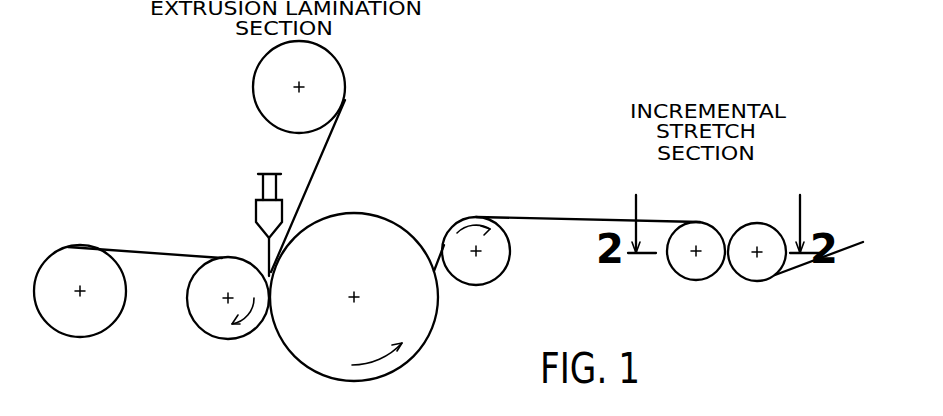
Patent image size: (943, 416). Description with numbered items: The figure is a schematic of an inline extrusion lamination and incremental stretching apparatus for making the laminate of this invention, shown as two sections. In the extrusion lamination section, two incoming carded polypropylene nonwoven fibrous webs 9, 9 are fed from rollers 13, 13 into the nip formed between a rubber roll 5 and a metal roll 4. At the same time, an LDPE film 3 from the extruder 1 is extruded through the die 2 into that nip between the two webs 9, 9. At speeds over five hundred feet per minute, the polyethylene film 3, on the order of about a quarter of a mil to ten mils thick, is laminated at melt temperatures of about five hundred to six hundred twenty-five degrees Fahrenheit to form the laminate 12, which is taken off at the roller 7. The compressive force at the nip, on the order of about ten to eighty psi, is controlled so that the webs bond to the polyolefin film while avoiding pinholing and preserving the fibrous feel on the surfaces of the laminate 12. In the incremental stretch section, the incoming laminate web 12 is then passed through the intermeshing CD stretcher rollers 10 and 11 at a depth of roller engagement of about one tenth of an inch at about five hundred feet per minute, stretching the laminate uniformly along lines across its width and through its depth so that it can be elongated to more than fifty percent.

The extruder 1 is at (260, 186).
The die 2 is at (256, 212).
The LDPE film 3 is at (267, 248).
The metal roll 4 is at (366, 234).
The rubber roll 5 is at (212, 318).
The roller 7 is at (487, 277).
The incoming webs 9 is at (130, 246).
The CD stretcher roller 10 is at (688, 273).
The CD stretcher roller 11 is at (757, 274).
The laminate 12 is at (550, 222).
The rollers 13 is at (72, 248).